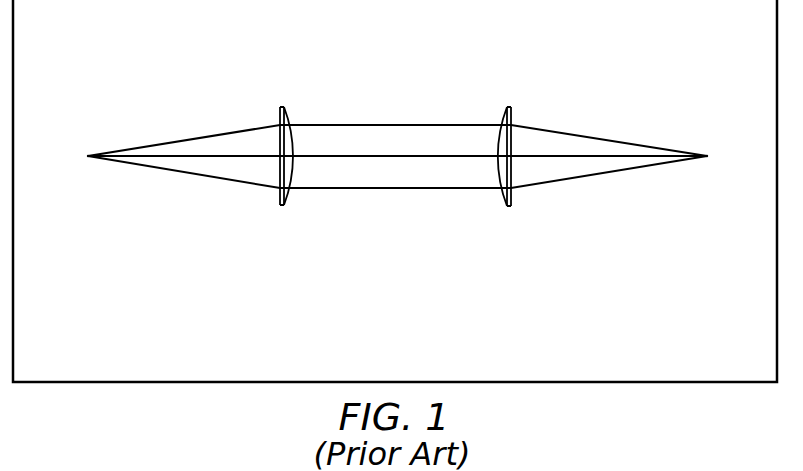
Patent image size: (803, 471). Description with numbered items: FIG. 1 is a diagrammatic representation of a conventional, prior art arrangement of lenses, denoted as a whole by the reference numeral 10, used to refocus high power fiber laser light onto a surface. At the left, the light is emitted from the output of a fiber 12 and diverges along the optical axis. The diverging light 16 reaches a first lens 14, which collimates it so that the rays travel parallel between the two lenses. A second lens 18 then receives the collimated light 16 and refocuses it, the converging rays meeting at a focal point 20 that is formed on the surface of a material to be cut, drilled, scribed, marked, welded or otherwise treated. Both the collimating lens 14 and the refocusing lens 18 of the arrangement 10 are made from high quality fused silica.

The arrangement of lenses 10 is at (553, 62).
The fiber 12 is at (88, 156).
The lens 14 is at (289, 117).
The light 16 is at (231, 133).
The lens 18 is at (498, 116).
The focal point 20 is at (707, 156).